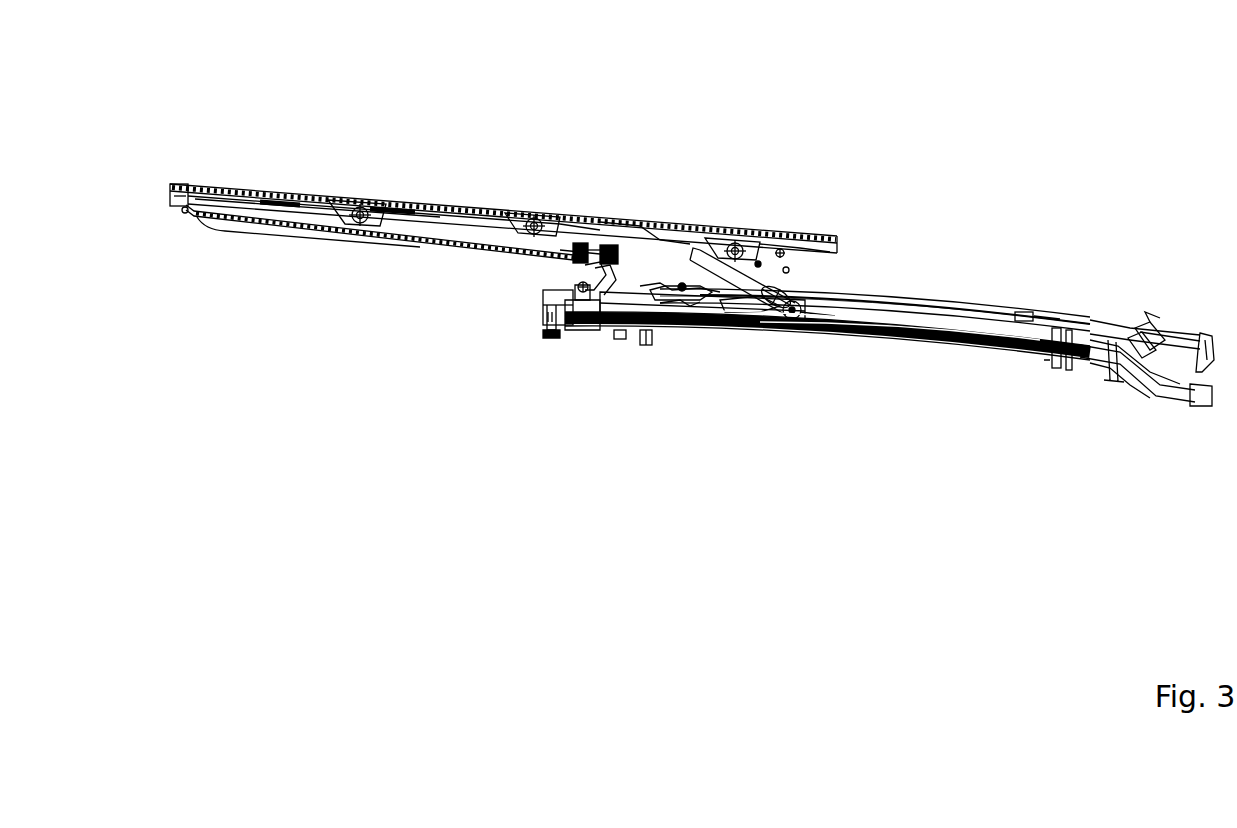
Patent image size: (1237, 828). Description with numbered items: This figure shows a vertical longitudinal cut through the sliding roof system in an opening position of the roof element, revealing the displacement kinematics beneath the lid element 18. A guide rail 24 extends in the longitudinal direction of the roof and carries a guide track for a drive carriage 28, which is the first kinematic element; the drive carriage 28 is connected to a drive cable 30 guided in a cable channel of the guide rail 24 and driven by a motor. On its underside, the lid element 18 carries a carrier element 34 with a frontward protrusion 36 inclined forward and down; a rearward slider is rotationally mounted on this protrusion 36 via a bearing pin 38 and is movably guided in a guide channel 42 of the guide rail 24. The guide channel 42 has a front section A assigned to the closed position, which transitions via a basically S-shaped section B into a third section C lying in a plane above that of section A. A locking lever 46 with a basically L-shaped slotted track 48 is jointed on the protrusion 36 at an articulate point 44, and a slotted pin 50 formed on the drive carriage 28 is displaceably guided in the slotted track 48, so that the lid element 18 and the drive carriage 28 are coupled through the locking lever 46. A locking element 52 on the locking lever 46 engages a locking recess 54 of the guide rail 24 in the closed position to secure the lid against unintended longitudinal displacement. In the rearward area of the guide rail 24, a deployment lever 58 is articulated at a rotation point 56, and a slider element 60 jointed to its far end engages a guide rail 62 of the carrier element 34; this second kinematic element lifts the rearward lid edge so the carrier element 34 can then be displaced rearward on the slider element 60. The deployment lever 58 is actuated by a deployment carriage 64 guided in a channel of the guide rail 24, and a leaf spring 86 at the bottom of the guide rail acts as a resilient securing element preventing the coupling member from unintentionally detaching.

The lid element 18 is at (298, 190).
The guide rail of the carrier element 62 is at (345, 234).
The slider element 60 is at (578, 244).
The deployment carriage 64 is at (602, 244).
The deployment lever 58 is at (583, 270).
The drive carriage 28 is at (622, 330).
The locking element 52 is at (682, 283).
The carrier element 34 is at (758, 262).
The articulate point 44 is at (784, 252).
The frontward protrusion 36 is at (792, 289).
The rotation point 56 is at (590, 325).
The drive cable 30 is at (595, 330).
The slotted pin 50 is at (633, 340).
The slotted track 48 is at (683, 333).
The locking lever 46 is at (740, 330).
The bearing pin 38 is at (803, 333).
The guide rail 24 is at (950, 345).
The third section C is at (936, 320).
The locking recess 54 is at (1028, 312).
The leaf spring 86 is at (1062, 355).
The guide channel 42 is at (1101, 318).
The S-shaped section B is at (1150, 328).
The front section A is at (1162, 395).